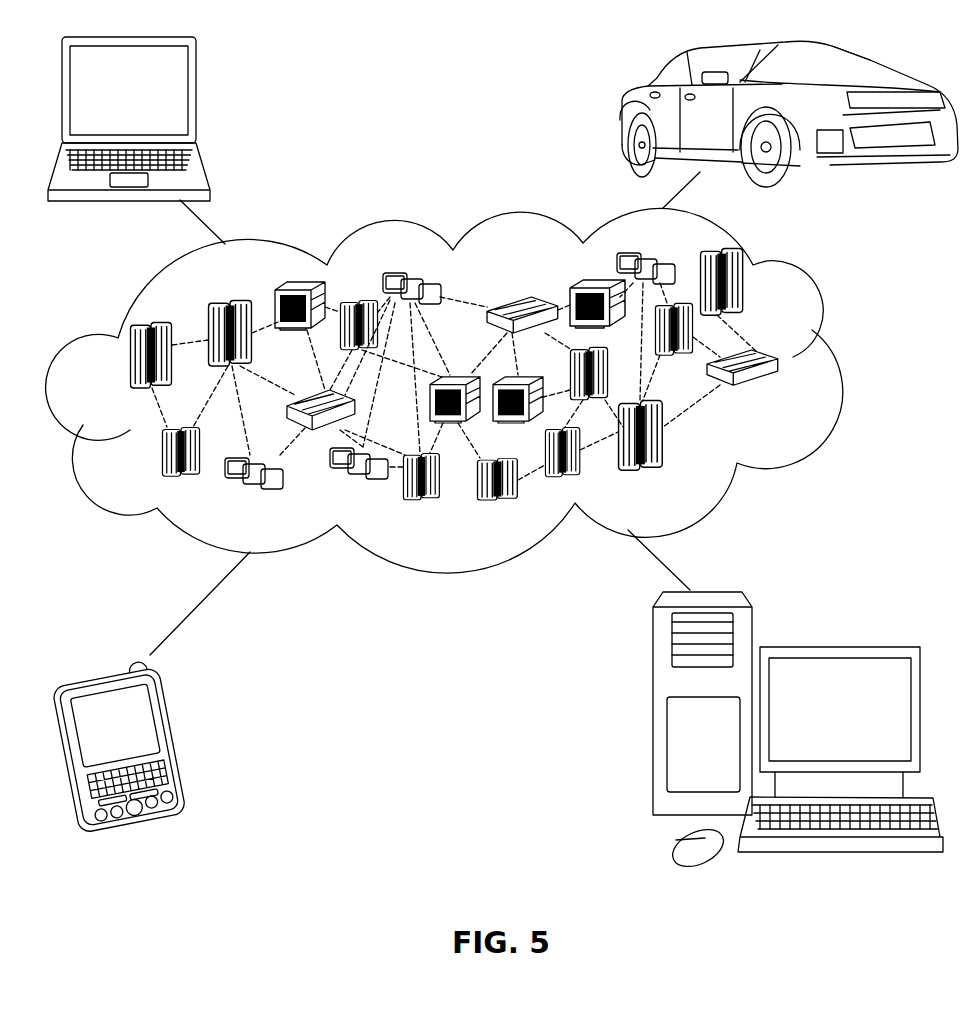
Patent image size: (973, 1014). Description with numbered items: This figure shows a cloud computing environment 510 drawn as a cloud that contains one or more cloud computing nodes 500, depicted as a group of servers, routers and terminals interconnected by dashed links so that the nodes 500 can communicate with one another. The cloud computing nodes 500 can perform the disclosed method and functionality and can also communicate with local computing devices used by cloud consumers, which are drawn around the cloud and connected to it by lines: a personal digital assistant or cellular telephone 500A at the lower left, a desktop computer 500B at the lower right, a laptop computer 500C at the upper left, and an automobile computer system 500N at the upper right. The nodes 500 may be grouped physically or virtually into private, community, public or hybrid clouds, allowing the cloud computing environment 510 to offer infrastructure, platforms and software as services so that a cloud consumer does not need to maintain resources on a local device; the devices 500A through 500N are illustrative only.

The cloud computing nodes 500 is at (779, 392).
The cloud computing environment 510 is at (833, 363).
The personal digital assistant (PDA) or cellular telephone 500A is at (185, 742).
The desktop computer 500B is at (838, 647).
The laptop computer 500C is at (196, 97).
The automobile computer system 500N is at (722, 114).